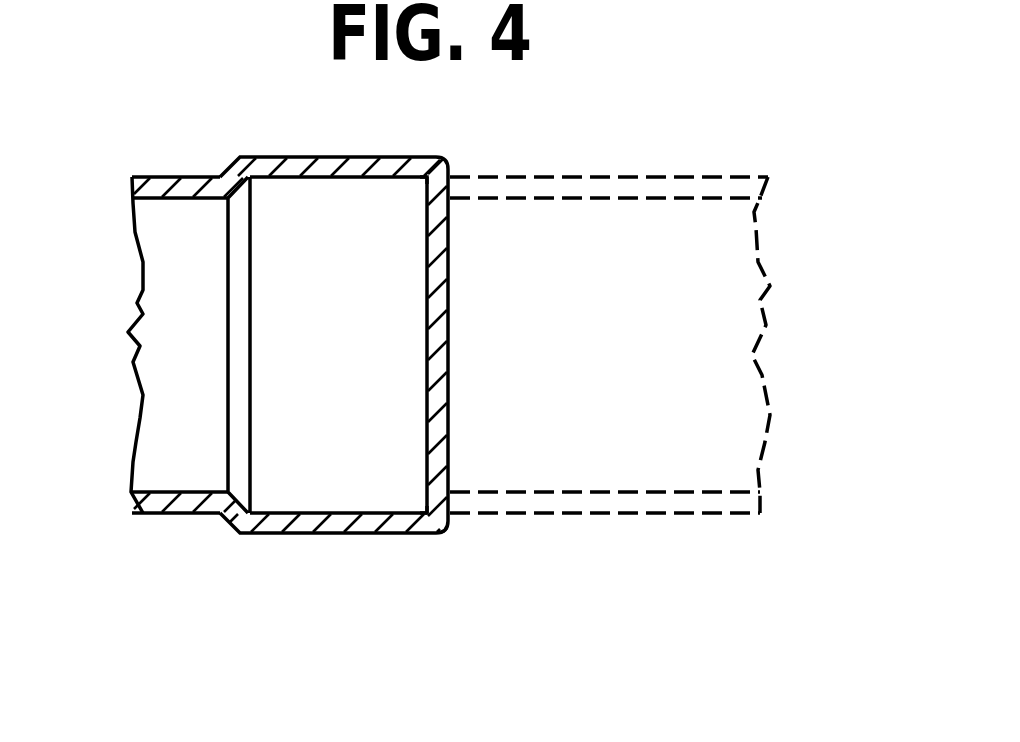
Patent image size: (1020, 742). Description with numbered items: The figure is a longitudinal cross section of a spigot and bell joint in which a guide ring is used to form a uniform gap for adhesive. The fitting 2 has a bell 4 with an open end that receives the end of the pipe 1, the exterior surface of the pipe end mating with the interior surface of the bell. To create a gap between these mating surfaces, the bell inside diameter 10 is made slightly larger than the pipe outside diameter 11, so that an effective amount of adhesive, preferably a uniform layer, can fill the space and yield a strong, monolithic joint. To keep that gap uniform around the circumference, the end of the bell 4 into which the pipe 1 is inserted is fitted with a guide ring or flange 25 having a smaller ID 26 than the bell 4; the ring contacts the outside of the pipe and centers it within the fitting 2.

The pipe 1 is at (610, 345).
The fitting 2 is at (187, 160).
The bell 4 is at (355, 391).
The bell inside diameter 10 is at (347, 177).
The pipe outside diameter 11 is at (543, 177).
The guide ring or flange 25 is at (452, 522).
The smaller ID 26 is at (415, 182).